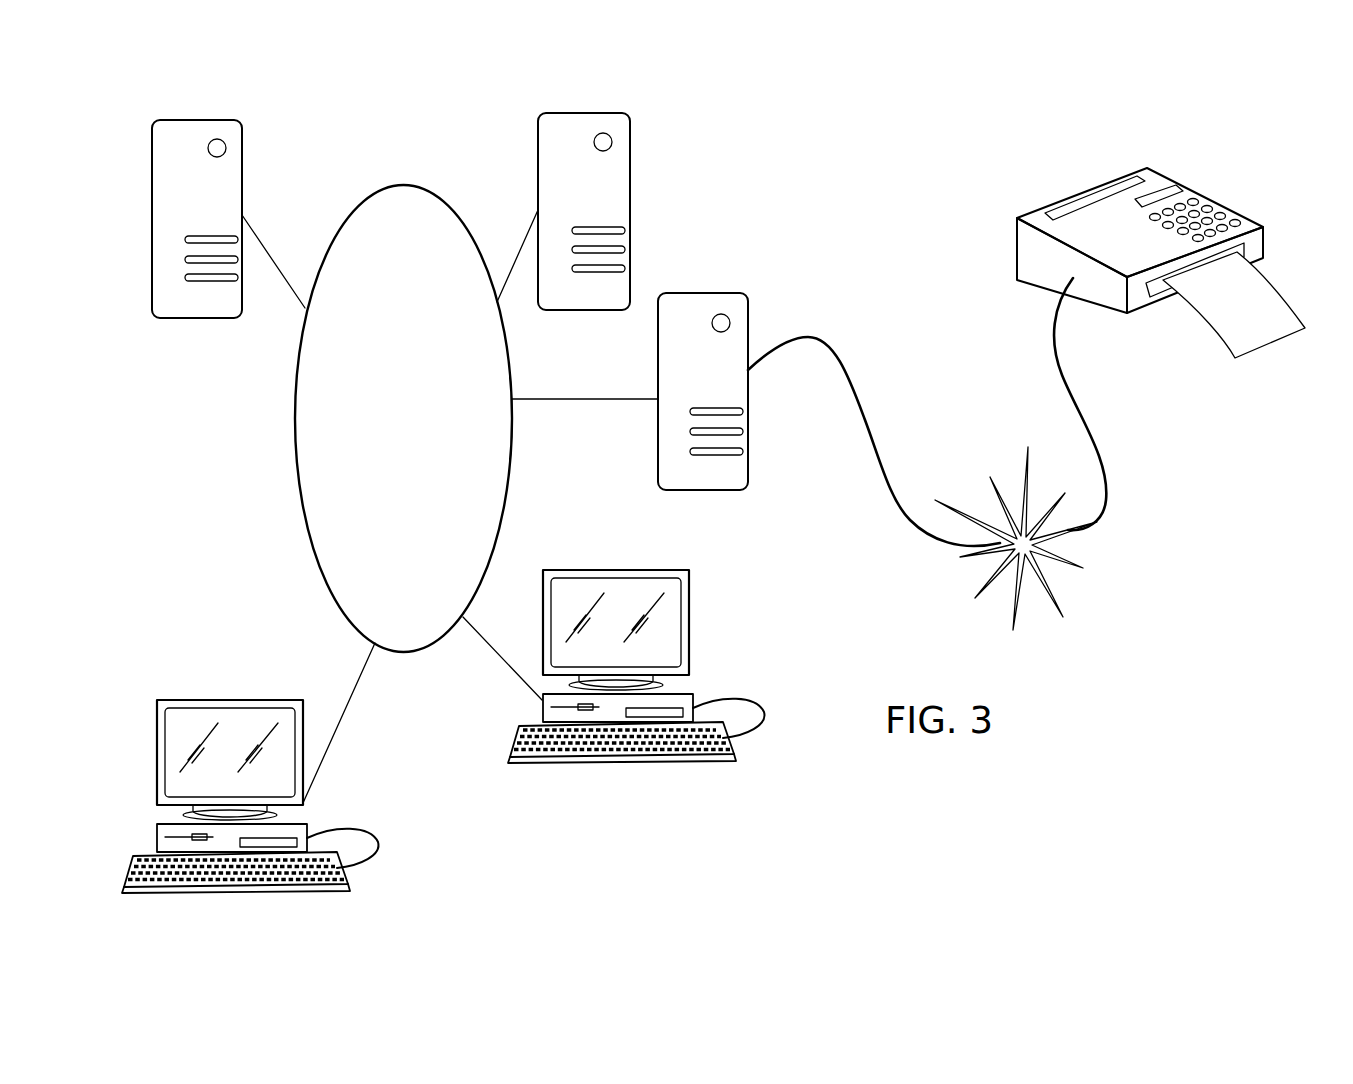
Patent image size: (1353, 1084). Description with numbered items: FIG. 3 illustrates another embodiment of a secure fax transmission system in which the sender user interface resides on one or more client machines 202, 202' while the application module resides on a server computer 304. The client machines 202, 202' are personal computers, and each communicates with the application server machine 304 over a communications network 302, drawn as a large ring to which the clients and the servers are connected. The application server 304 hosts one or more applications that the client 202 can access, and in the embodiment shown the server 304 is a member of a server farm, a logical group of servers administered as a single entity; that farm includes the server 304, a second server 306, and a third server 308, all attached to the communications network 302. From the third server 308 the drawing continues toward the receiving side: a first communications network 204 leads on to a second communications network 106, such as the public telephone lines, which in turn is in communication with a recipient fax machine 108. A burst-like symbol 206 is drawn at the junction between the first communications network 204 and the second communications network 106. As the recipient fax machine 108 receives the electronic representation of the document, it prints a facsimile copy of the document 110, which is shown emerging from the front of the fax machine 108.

The communications network 302 is at (294, 419).
The server computer 304 is at (242, 177).
The second server 306 is at (538, 170).
The third server 308 is at (697, 292).
The client machine 202 is at (250, 778).
The client machine 202' is at (636, 648).
The first communications network 204 is at (808, 334).
The noise burst 206 is at (1060, 602).
The second communications network 106 is at (1063, 373).
The recipient fax machine 108 is at (1156, 169).
The facsimile copy of the document 110 is at (1235, 360).